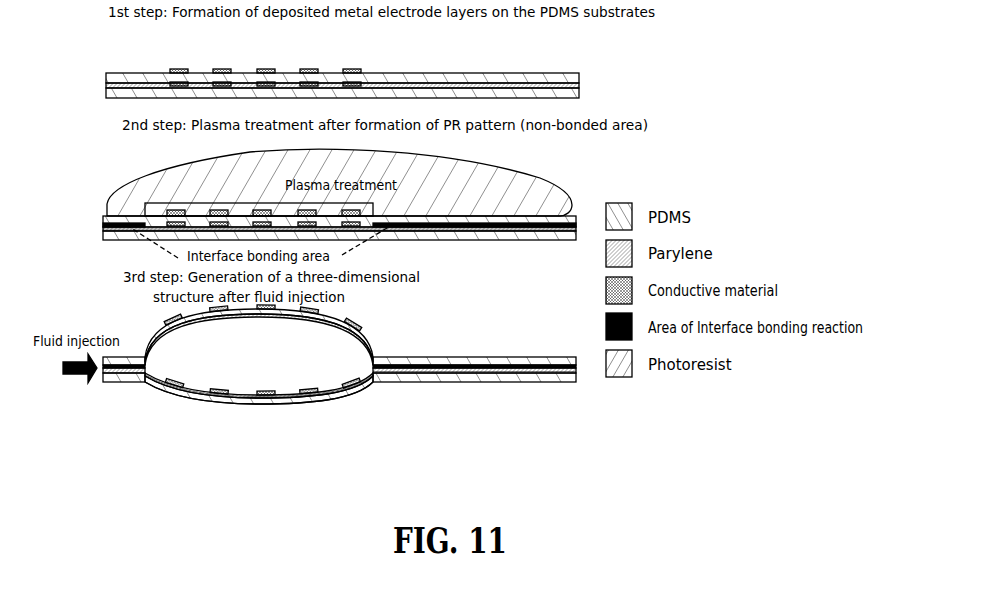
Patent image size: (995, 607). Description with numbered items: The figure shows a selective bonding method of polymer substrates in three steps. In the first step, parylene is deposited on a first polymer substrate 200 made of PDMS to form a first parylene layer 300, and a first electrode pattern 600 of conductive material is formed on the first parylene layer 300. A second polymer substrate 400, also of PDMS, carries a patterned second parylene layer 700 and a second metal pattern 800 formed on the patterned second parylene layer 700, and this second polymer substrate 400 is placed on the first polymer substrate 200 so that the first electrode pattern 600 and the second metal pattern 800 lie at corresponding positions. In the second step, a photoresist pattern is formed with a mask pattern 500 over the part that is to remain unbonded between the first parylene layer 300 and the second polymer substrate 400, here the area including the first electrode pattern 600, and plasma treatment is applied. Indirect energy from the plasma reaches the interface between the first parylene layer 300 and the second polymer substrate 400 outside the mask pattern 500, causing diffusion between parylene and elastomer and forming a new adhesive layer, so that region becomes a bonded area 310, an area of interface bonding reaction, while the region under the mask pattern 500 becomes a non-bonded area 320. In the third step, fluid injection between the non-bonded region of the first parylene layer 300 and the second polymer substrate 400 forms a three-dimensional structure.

The first polymer substrate 200 is at (114, 94).
The first parylene layer 300 is at (112, 85).
The bonded area 310 is at (330, 227).
The non-bonded area 320 is at (537, 232).
The second polymer substrate 400 is at (118, 78).
The mask pattern 500 is at (375, 203).
The first electrode pattern 600 is at (168, 84).
The patterned second parylene layer 700 is at (363, 73).
The second metal pattern 800 is at (362, 70).